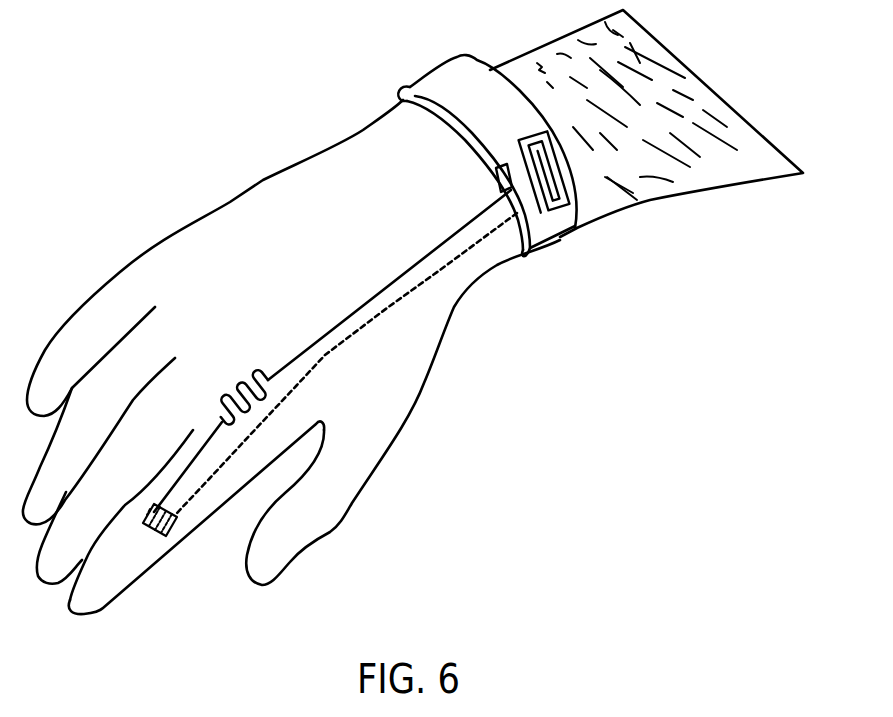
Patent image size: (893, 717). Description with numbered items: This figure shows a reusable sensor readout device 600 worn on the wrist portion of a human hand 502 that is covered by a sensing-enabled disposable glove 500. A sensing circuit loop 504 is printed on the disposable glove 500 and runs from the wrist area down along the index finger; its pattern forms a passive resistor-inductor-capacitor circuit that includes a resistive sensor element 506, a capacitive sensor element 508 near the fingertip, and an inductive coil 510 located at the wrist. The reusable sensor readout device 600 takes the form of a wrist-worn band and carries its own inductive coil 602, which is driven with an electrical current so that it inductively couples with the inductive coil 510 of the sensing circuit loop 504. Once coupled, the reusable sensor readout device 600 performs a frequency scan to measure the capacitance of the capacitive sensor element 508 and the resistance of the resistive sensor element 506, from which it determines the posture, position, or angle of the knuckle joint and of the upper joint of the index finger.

The disposable glove 500 is at (232, 203).
The human hand 502 is at (700, 78).
The sensing circuit loop 504 is at (391, 259).
The resistive sensor element 506 is at (233, 391).
The capacitive sensor element 508 is at (143, 510).
The inductive coil 510 is at (488, 171).
The reusable sensor readout device 600 is at (430, 76).
The inductive coil 602 is at (557, 209).